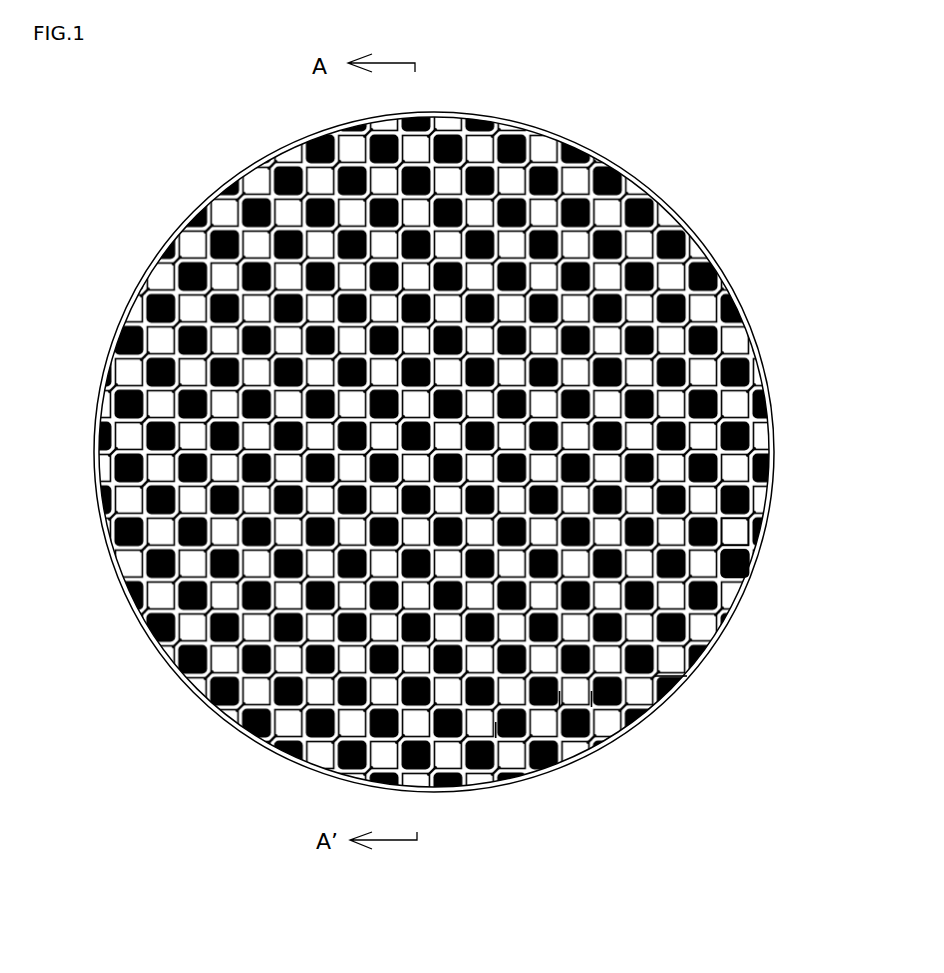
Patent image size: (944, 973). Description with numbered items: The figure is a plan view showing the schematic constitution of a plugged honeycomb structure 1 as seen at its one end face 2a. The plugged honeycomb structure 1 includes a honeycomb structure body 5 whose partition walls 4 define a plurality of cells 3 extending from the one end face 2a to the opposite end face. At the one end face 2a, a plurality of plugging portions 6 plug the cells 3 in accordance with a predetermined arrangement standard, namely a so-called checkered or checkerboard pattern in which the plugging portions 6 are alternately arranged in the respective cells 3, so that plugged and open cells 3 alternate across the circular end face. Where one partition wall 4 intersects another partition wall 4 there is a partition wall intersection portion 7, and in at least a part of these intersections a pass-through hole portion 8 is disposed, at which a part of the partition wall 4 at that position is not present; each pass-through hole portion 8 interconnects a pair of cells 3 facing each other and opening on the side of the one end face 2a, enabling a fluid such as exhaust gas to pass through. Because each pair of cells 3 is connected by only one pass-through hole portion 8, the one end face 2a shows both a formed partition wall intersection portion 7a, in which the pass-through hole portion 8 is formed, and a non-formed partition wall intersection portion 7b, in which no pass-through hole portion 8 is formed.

The plugged honeycomb structure 1 is at (82, 243).
The one end face 2a is at (750, 431).
The cells 3 is at (782, 527).
The honeycomb structure body 5 is at (735, 525).
The partition walls 4 is at (725, 578).
The plugging portions 6 is at (676, 682).
The partition wall intersection portion 7 is at (632, 743).
The formed partition wall intersection portion 7a is at (563, 705).
The non-formed partition wall intersection portion 7b is at (591, 708).
The pass-through hole portion 8 is at (496, 732).